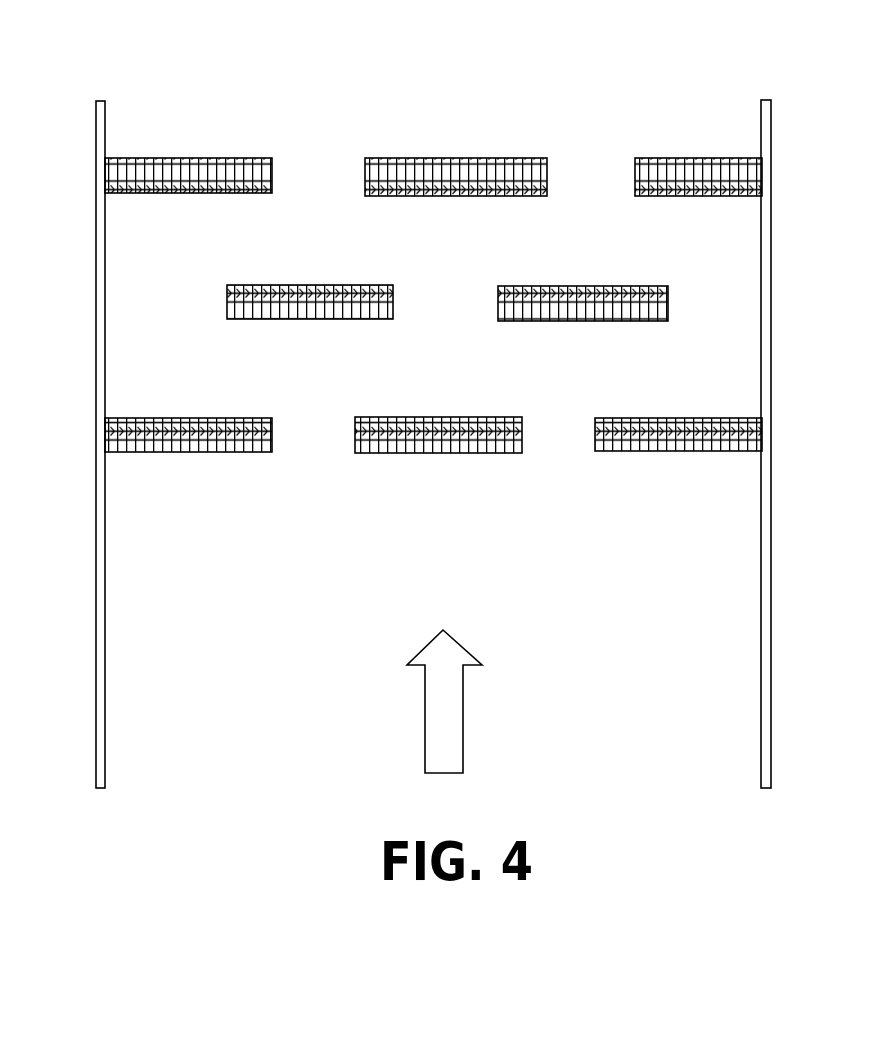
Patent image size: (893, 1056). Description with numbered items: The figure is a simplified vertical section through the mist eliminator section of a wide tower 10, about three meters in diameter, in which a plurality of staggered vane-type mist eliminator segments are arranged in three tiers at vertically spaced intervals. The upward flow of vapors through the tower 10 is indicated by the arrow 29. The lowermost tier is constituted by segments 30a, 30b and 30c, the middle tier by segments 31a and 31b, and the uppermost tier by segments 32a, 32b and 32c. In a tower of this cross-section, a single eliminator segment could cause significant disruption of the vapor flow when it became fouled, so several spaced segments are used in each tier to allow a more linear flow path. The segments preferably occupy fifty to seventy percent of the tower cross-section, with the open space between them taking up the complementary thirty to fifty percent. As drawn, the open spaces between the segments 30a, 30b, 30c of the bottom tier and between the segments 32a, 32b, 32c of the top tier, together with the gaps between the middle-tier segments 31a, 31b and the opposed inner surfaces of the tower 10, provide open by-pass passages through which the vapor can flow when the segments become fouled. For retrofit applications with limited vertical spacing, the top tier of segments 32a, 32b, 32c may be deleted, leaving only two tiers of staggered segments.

The tower 10 is at (752, 670).
The arrow 29 is at (445, 715).
The segment 30a is at (138, 415).
The segment 30b is at (457, 455).
The segment 30c is at (725, 413).
The segment 31a is at (245, 285).
The segment 31b is at (608, 278).
The segment 32a is at (132, 153).
The segment 32b is at (488, 145).
The segment 32c is at (750, 150).